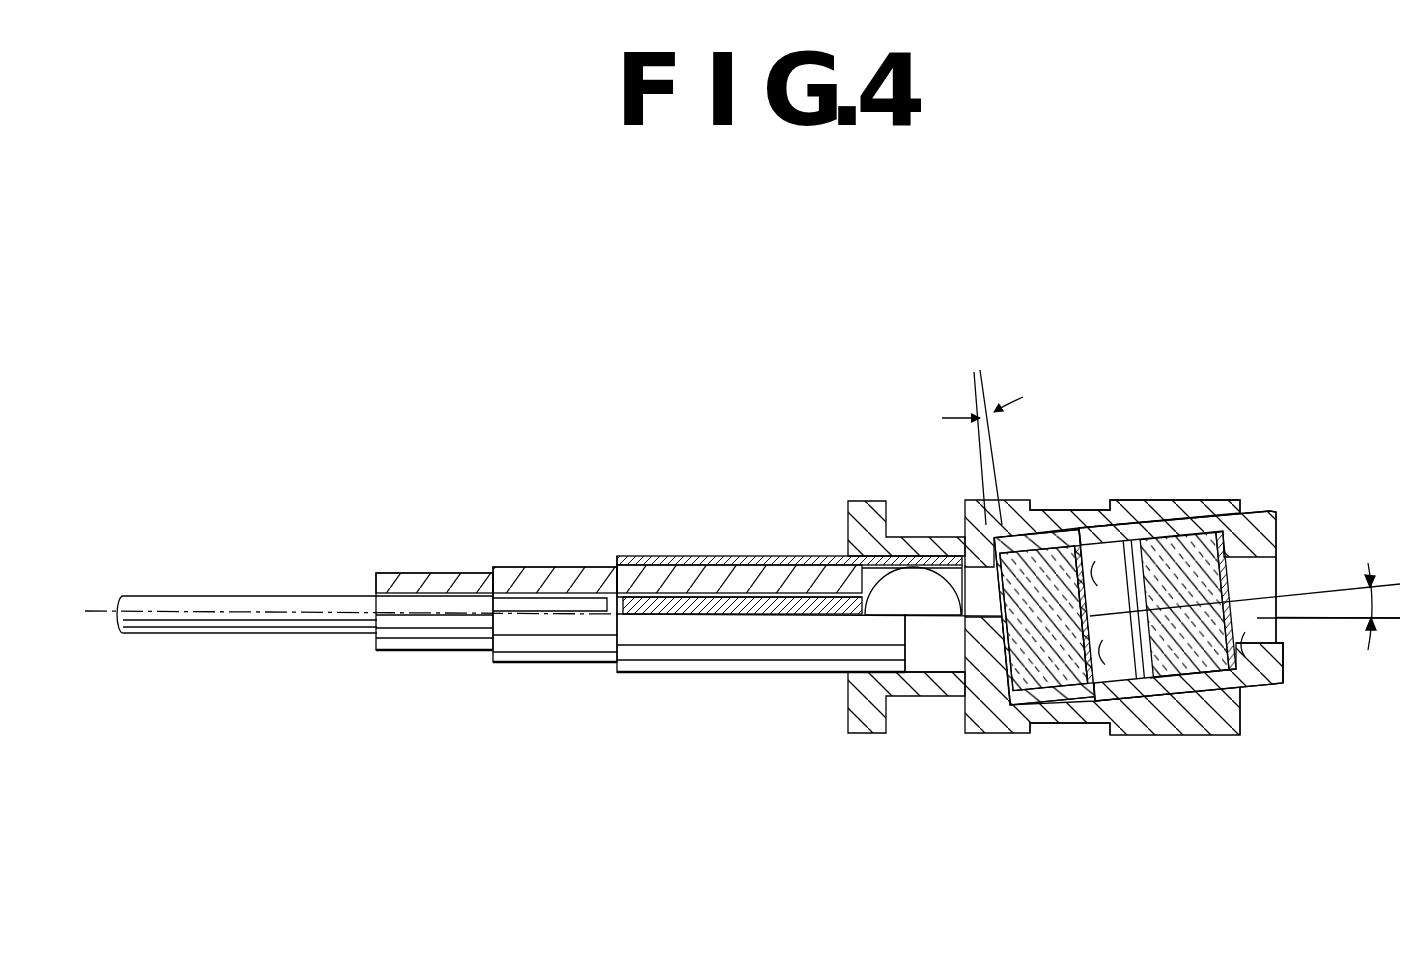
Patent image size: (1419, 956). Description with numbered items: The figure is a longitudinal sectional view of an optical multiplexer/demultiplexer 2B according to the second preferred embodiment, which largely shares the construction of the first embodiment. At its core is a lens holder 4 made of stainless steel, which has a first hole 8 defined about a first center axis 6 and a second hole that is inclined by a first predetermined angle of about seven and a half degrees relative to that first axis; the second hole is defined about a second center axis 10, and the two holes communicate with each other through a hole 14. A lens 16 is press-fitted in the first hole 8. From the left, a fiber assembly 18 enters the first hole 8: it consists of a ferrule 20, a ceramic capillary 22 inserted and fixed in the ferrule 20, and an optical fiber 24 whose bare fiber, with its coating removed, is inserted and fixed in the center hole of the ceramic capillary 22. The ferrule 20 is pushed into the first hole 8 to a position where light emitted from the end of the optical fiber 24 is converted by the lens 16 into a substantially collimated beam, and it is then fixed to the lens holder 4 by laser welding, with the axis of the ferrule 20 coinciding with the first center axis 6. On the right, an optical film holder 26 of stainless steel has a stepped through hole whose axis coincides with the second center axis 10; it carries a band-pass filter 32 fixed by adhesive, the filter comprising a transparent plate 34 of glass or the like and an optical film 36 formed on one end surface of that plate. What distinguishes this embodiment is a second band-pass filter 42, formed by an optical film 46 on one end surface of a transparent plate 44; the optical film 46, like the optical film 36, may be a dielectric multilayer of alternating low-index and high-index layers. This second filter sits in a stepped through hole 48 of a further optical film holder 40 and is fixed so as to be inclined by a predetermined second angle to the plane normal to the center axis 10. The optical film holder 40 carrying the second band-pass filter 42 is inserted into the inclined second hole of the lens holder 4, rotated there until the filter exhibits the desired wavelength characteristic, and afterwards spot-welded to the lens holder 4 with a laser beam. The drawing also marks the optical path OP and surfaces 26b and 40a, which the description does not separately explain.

The optical multiplexer/demultiplexer 2B is at (1055, 502).
The lens holder 4 is at (978, 733).
The first center axis 6 is at (912, 618).
The first hole 8 is at (862, 582).
The second center axis 10 is at (1307, 592).
The hole 14 is at (982, 637).
The lens 16 is at (897, 587).
The fiber assembly 18 is at (506, 668).
The ferrule 20 is at (427, 582).
The ceramic capillary 22 is at (703, 610).
The optical fiber 24 is at (214, 595).
The optical film holder 26 is at (1075, 546).
The spherical seat surface 26b is at (1152, 677).
The band-pass filter 32 is at (1060, 548).
The transparent plate 34 is at (1042, 690).
The optical film 36 is at (1090, 660).
The optical film holder 40 is at (1245, 512).
The holder end face 40a is at (1130, 700).
The second band-pass filter 42 is at (1190, 532).
The transparent plate 44 is at (1208, 667).
The optical film 46 is at (1257, 687).
The stepped through hole 48 is at (1237, 540).
The optical axis OP is at (1330, 622).